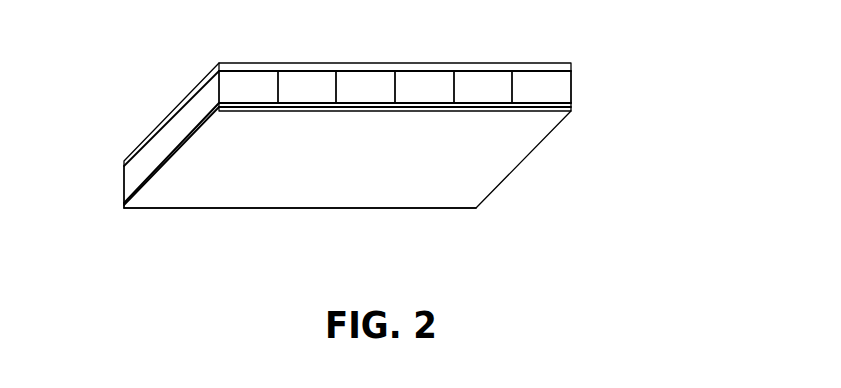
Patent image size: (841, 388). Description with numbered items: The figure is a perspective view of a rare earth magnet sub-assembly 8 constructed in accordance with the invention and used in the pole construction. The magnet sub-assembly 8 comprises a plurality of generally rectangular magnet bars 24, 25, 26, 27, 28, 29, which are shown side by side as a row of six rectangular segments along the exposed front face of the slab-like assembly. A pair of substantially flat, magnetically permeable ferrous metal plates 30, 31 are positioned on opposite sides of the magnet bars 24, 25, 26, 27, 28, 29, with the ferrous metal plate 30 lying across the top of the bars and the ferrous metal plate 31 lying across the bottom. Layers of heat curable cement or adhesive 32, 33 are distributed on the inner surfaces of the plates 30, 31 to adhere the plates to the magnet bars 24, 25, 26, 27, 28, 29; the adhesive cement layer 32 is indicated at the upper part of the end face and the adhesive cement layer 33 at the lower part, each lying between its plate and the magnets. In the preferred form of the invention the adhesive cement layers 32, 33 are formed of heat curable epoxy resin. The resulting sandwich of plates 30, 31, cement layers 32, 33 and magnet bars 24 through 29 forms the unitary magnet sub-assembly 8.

The magnet sub-assembly 8 is at (358, 136).
The magnet bar 24 is at (241, 77).
The magnet bar 25 is at (305, 80).
The magnet bar 26 is at (363, 78).
The magnet bar 27 is at (421, 78).
The magnet bar 28 is at (477, 78).
The magnet bar 29 is at (541, 75).
The ferrous metal plate 30 is at (172, 110).
The ferrous metal plate 31 is at (167, 200).
The adhesive cement layer 32 is at (124, 171).
The adhesive cement layer 33 is at (124, 203).